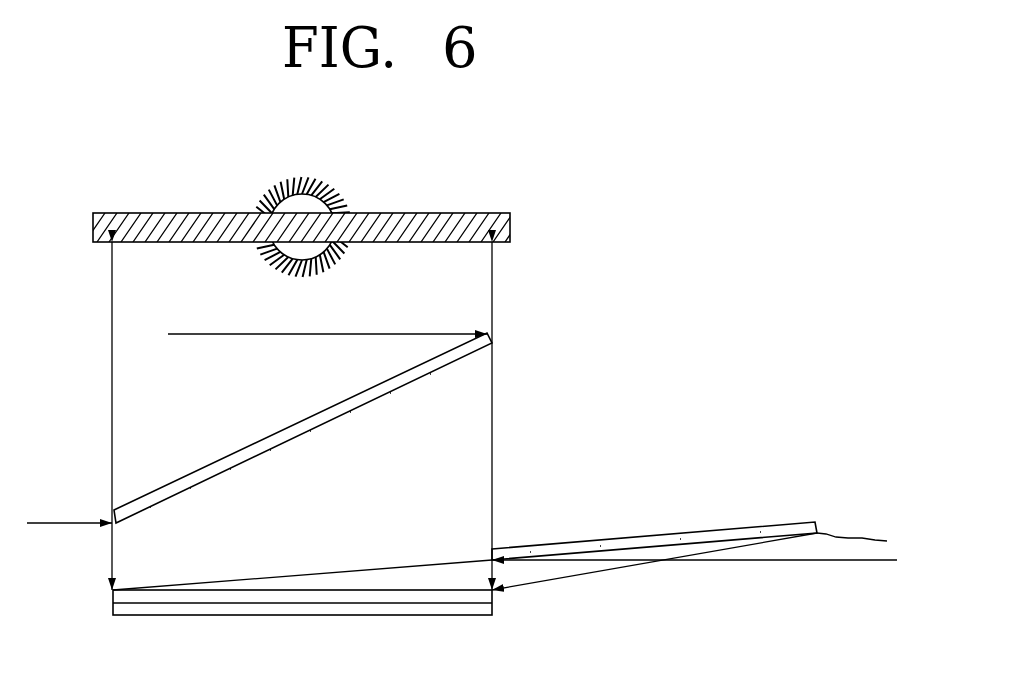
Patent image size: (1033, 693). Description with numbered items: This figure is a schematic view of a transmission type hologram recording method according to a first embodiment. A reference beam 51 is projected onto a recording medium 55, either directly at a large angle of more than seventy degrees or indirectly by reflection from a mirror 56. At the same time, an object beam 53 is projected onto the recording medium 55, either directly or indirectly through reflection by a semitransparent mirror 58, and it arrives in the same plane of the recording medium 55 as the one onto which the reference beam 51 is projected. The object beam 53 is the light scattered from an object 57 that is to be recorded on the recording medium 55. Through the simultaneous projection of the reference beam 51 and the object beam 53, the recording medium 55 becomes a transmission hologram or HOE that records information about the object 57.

The reference beam 51 is at (868, 538).
The object beam 53 is at (492, 307).
The recording medium 55 is at (113, 603).
The mirror 56 is at (570, 542).
The object 57 is at (510, 226).
The semitransparent mirror 58 is at (433, 370).